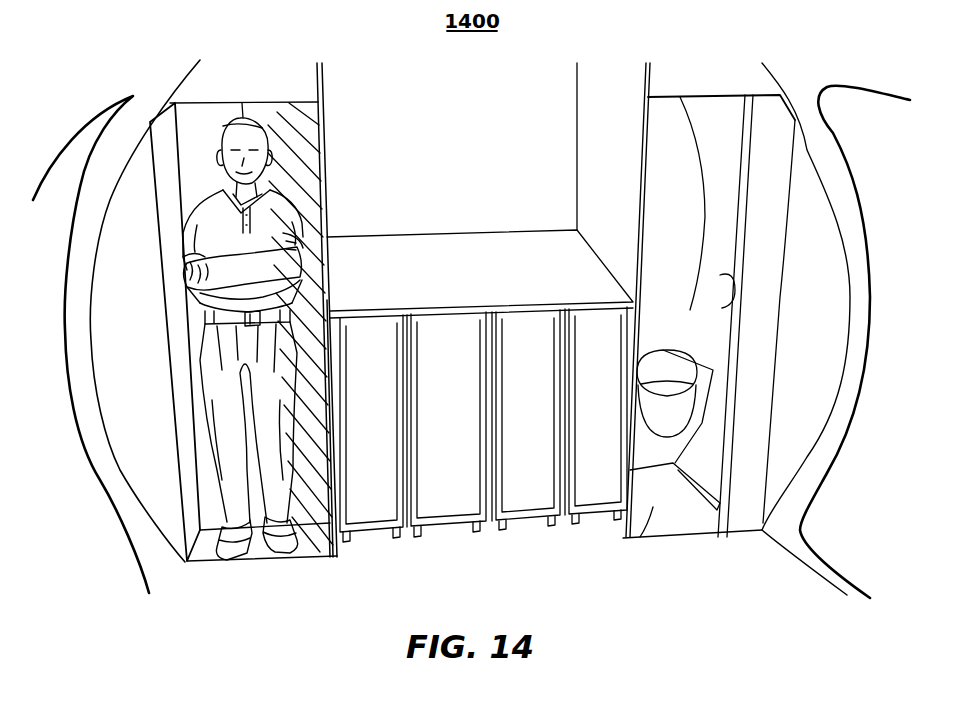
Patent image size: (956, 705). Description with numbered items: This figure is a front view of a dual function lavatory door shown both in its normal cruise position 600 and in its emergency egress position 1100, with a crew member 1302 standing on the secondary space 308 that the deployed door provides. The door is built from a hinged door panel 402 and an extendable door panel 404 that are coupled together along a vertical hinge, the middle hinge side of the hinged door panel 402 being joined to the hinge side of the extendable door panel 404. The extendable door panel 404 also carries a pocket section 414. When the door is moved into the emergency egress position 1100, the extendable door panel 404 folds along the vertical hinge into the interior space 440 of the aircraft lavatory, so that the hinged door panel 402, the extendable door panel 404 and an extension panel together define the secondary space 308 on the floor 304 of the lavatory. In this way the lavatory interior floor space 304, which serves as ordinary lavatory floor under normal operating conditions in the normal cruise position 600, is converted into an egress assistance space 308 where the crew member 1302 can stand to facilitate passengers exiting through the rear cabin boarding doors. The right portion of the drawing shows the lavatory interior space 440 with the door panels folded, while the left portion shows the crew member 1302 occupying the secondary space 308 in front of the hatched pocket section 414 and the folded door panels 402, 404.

The extendable door panel 404 is at (197, 116).
The hinged door panel 402 is at (165, 145).
The pocket section 414 is at (288, 107).
The crew member 1302 is at (283, 193).
The interior space of the aircraft lavatory 440 is at (665, 265).
The emergency egress position 1100 is at (241, 580).
The egress assistance space 308 is at (200, 565).
The lavatory interior floor space 304 is at (657, 508).
The normal cruise position 600 is at (707, 556).